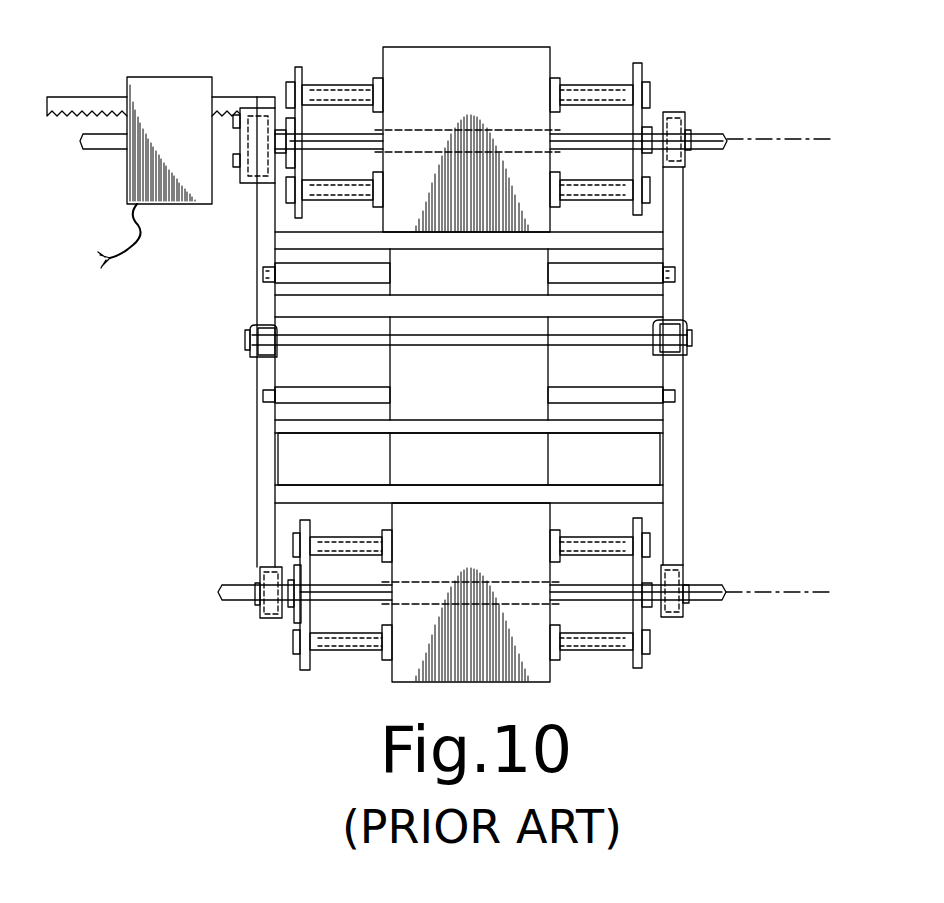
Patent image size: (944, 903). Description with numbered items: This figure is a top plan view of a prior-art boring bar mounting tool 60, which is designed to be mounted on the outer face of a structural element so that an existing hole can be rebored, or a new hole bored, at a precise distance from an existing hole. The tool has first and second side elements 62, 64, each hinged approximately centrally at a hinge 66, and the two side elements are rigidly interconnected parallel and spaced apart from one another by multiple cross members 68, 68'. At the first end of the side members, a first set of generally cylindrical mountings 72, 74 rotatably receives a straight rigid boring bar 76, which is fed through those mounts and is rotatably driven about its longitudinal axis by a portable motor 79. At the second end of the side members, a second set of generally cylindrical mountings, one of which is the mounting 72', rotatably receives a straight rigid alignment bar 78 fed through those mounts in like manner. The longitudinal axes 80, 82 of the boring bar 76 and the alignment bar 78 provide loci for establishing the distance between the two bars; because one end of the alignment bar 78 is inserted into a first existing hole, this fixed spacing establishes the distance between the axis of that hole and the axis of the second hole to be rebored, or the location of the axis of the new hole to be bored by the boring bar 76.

The boring bar mounting tool 60 is at (237, 277).
The first side element 62 is at (268, 457).
The second side element 64 is at (672, 456).
The central hinge 66 is at (692, 335).
The cross member 68 is at (469, 276).
The cross member 68' is at (469, 459).
The cylindrical mounting 72 is at (254, 107).
The cylindrical mounting 72' is at (253, 634).
The cylindrical mounting 74 is at (685, 120).
The boring bar 76 is at (602, 133).
The alignment bar 78 is at (600, 598).
The portable motor 79 is at (172, 77).
The longitudinal axis of the boring bar 80 is at (830, 150).
The longitudinal axis of the alignment bar 82 is at (812, 592).